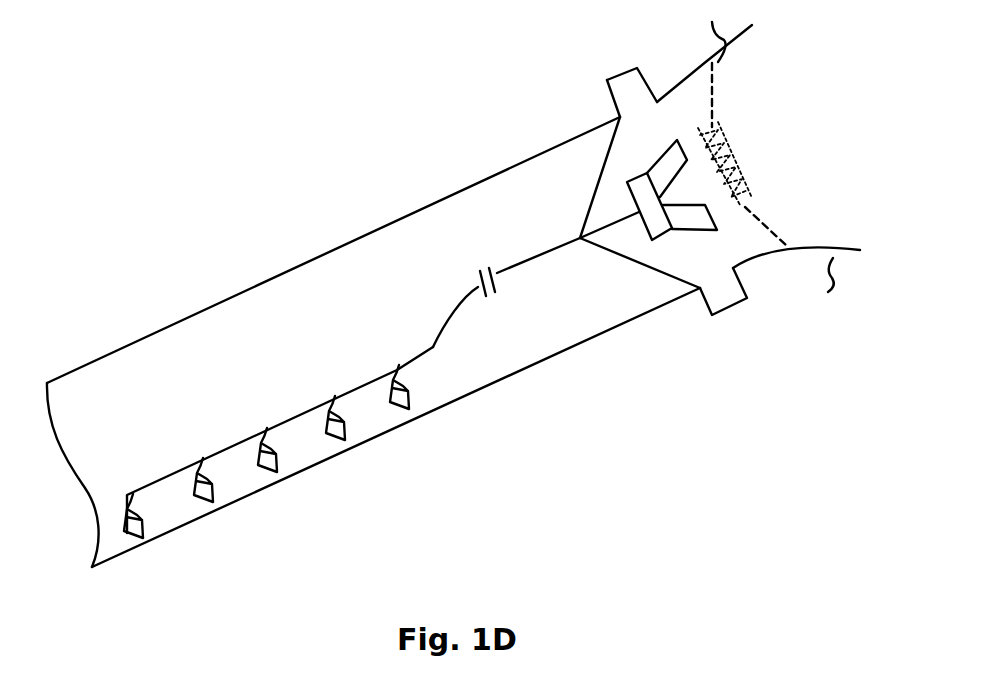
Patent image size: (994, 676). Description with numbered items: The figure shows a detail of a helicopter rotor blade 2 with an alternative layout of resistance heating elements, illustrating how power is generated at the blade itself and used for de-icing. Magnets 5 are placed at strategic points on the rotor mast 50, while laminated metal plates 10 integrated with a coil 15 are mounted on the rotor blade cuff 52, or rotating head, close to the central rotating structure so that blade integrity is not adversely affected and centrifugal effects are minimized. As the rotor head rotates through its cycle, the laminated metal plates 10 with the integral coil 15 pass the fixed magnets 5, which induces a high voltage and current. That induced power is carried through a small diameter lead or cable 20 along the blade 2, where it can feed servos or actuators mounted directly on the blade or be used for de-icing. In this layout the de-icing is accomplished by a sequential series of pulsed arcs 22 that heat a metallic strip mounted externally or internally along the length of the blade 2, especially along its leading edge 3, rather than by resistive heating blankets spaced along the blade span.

The blade 2 is at (523, 160).
The leading edge 3 is at (130, 549).
The magnets 5 is at (728, 200).
The laminated metal plates 10 is at (700, 220).
The coil 15 is at (662, 208).
The lead or cable 20 is at (537, 258).
The pulsed arcs 22 is at (408, 413).
The rotor mast 50 is at (817, 262).
The rotor blade cuff 52 is at (627, 142).